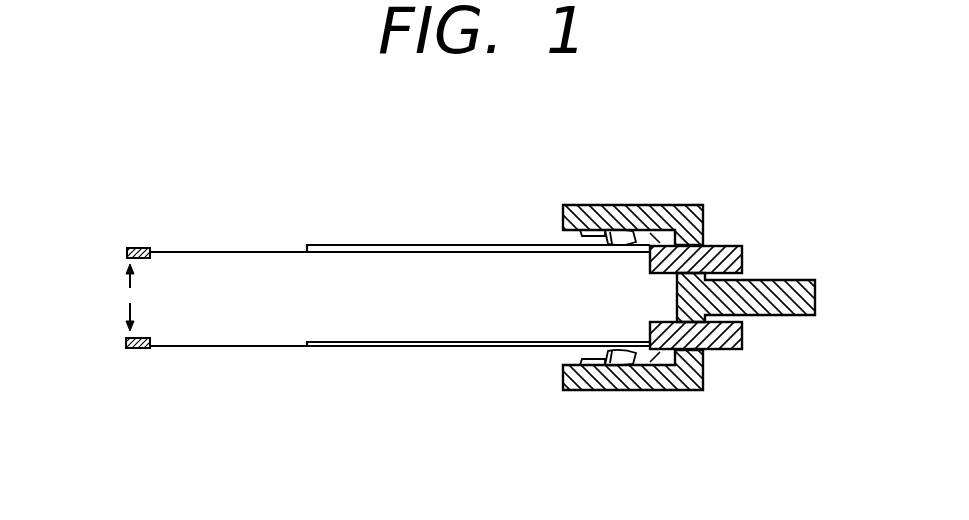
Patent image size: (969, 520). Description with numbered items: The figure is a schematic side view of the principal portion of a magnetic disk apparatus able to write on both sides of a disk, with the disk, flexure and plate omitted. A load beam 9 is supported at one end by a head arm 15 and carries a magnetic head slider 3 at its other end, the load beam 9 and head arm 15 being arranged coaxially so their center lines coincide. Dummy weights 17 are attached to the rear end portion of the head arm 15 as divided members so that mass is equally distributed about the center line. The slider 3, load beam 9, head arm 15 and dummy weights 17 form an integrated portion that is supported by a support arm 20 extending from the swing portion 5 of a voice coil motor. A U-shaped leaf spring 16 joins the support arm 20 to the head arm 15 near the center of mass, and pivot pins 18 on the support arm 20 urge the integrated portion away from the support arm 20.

The magnetic head slider 3 is at (124, 344).
The swing portion 5 is at (797, 297).
The load beam 9 is at (207, 250).
The head arm 15 is at (445, 245).
The leaf spring 16 is at (650, 234).
The dummy weights 17 is at (718, 246).
The pivot pins 18 is at (619, 238).
The support arm 20 is at (613, 205).